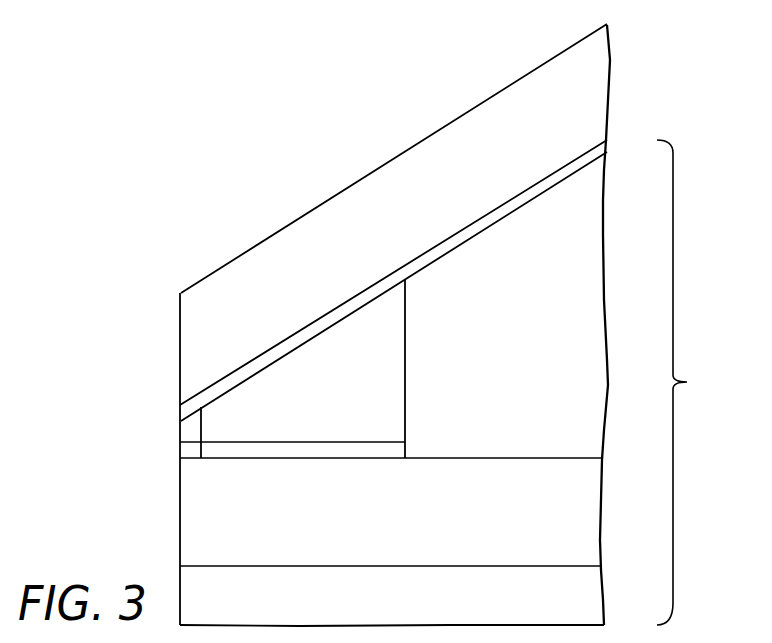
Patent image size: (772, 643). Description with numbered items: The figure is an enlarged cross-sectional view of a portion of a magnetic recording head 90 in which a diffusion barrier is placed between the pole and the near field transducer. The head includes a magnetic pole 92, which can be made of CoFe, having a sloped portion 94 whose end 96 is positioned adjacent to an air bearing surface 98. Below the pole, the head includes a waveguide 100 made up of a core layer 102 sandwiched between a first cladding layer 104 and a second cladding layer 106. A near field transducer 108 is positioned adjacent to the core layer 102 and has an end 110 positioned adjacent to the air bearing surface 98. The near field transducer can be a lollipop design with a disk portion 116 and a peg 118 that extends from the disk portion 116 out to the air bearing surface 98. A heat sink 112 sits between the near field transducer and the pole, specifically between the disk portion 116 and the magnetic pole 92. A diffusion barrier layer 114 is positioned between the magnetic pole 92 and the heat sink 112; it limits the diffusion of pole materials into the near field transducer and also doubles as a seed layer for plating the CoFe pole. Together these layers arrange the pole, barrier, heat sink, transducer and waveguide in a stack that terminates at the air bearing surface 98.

The magnetic recording head 90 is at (664, 84).
The magnetic pole 92 is at (370, 190).
The sloped portion 94 is at (283, 250).
The end 96 is at (192, 355).
The air bearing surface 98 is at (180, 433).
The waveguide 100 is at (696, 382).
The core layer 102 is at (588, 517).
The first cladding layer 104 is at (583, 340).
The second cladding layer 106 is at (590, 597).
The near field transducer 108 is at (397, 450).
The end 110 is at (178, 448).
The heat sink 112 is at (387, 372).
The diffusion barrier layer 114 is at (461, 235).
The disk portion 116 is at (303, 450).
The peg 118 is at (191, 452).